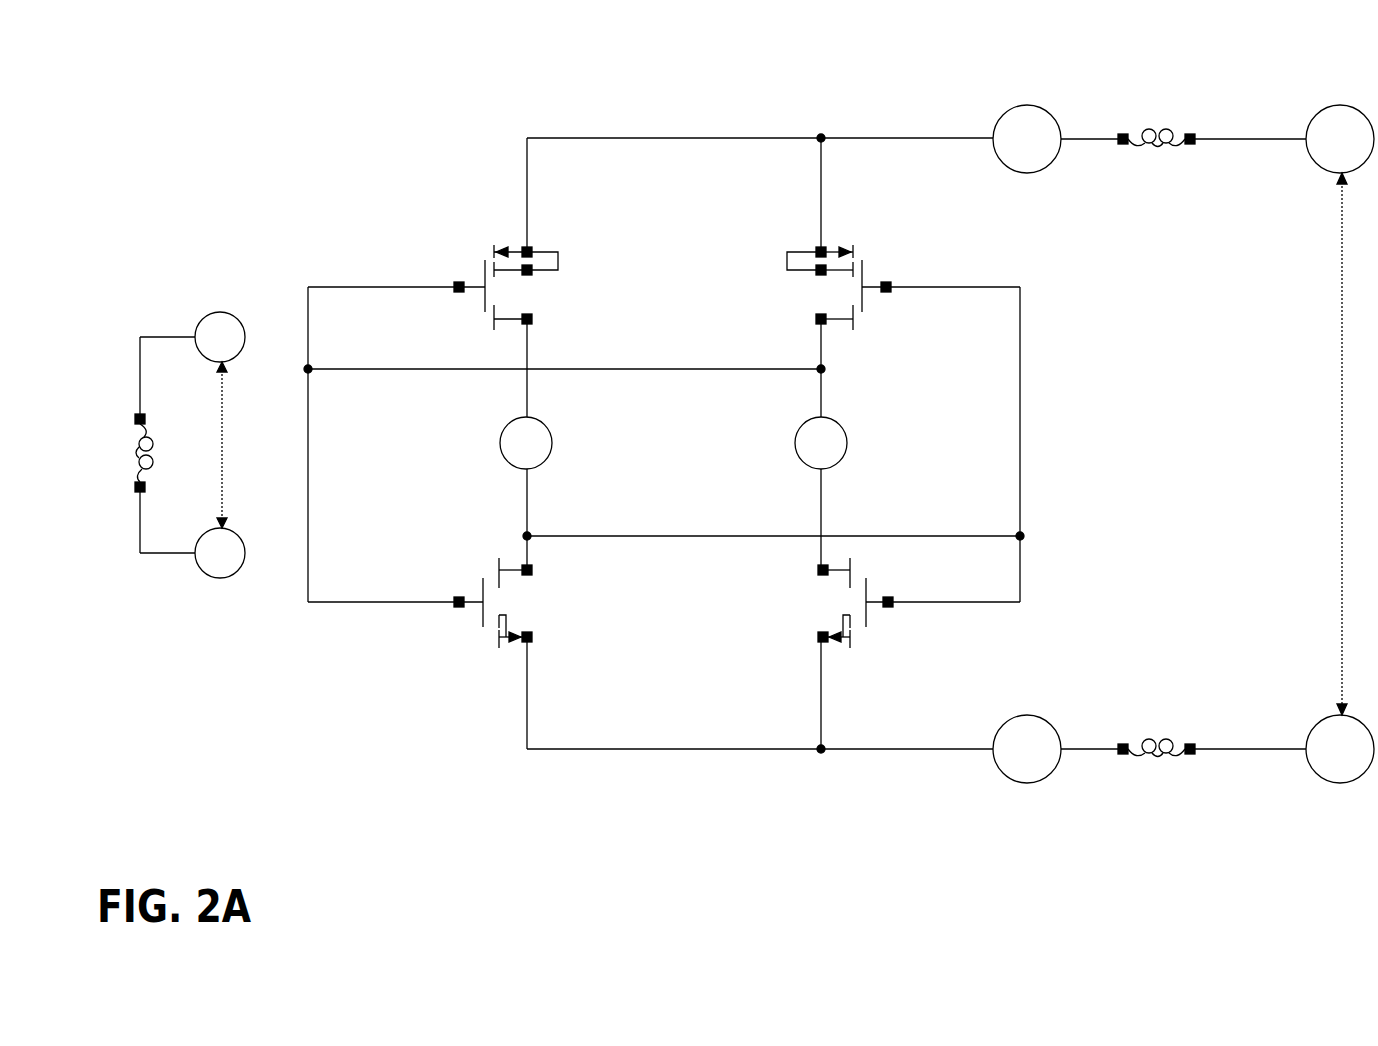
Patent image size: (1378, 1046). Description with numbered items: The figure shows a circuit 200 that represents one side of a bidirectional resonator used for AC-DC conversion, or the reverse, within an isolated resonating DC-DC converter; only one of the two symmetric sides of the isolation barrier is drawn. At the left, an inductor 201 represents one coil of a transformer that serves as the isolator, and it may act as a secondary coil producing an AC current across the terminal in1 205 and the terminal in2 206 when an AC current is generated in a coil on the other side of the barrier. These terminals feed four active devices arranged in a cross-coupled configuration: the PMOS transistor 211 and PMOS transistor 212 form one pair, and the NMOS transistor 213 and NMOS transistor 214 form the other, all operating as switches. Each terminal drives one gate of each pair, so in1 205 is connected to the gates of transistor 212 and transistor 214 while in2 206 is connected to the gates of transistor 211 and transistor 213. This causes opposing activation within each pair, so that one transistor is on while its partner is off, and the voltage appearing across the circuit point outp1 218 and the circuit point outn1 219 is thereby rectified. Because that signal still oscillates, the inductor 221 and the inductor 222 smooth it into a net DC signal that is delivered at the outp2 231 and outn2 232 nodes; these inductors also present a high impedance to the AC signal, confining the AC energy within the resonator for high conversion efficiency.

The circuit 200 is at (113, 27).
The inductor 201 is at (141, 445).
The terminal in1 205 is at (205, 308).
The terminal in2 206 is at (210, 572).
The PMOS transistor 211 is at (466, 252).
The PMOS transistor 212 is at (911, 252).
The NMOS transistor 213 is at (584, 612).
The NMOS transistor 214 is at (796, 617).
The circuit point outp1 218 is at (1010, 107).
The circuit point outn1 219 is at (1010, 717).
The inductor 221 is at (1156, 112).
The inductor 222 is at (1156, 722).
The positive DC output node outp2 231 is at (1312, 106).
The negative DC output node outn2 232 is at (1312, 716).